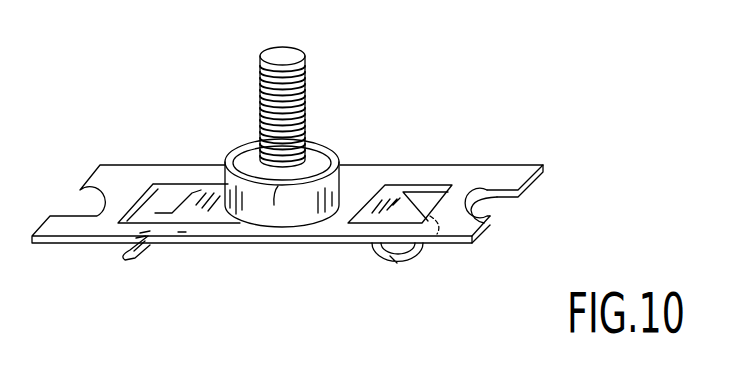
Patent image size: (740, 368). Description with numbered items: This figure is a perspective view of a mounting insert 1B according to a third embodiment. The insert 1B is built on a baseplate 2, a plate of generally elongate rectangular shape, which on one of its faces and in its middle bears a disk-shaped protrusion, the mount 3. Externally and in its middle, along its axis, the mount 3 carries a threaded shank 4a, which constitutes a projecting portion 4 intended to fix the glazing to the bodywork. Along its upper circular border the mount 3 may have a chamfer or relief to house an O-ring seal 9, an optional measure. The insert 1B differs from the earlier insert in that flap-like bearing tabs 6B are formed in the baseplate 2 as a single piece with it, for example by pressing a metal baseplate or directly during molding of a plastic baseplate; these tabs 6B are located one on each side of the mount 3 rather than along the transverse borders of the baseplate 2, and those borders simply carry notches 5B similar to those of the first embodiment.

The insert 1B is at (343, 121).
The baseplate 2 is at (367, 180).
The mount 3 is at (250, 155).
The projecting portion 4 is at (275, 52).
The shank 4a is at (262, 96).
The notches 5B is at (494, 198).
The bearing tabs 6B is at (128, 257).
The O-ring seal 9 is at (274, 205).